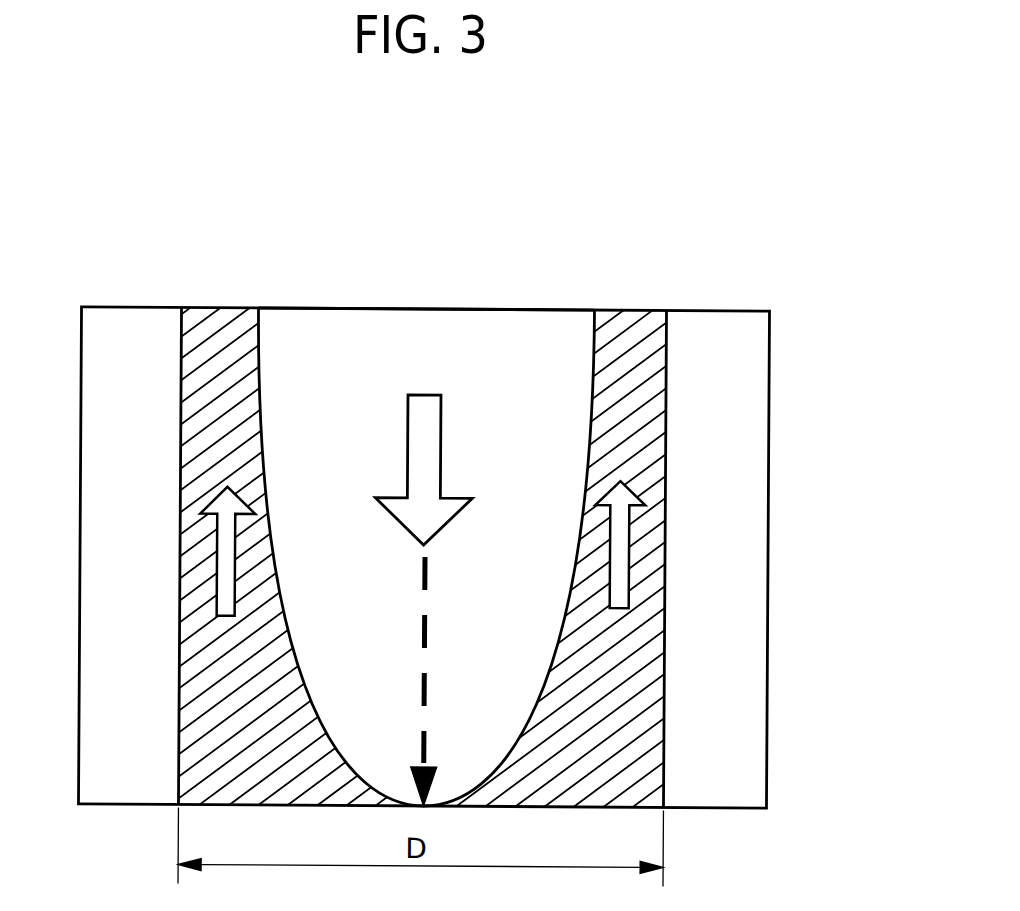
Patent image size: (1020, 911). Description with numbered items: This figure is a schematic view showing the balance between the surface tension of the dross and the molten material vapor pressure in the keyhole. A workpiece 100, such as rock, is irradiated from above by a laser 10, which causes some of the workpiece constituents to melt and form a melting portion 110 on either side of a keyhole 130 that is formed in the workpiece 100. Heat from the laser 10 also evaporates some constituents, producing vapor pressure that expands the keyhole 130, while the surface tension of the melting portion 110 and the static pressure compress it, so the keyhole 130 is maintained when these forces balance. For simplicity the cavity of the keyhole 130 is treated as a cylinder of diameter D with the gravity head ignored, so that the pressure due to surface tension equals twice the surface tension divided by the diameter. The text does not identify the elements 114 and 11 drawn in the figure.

The workpiece 100 is at (732, 461).
The melting portion 110 is at (620, 685).
The inner surface 114 is at (620, 560).
The keyhole 130 is at (303, 328).
The laser 10 is at (425, 432).
The center axis 11 is at (428, 695).